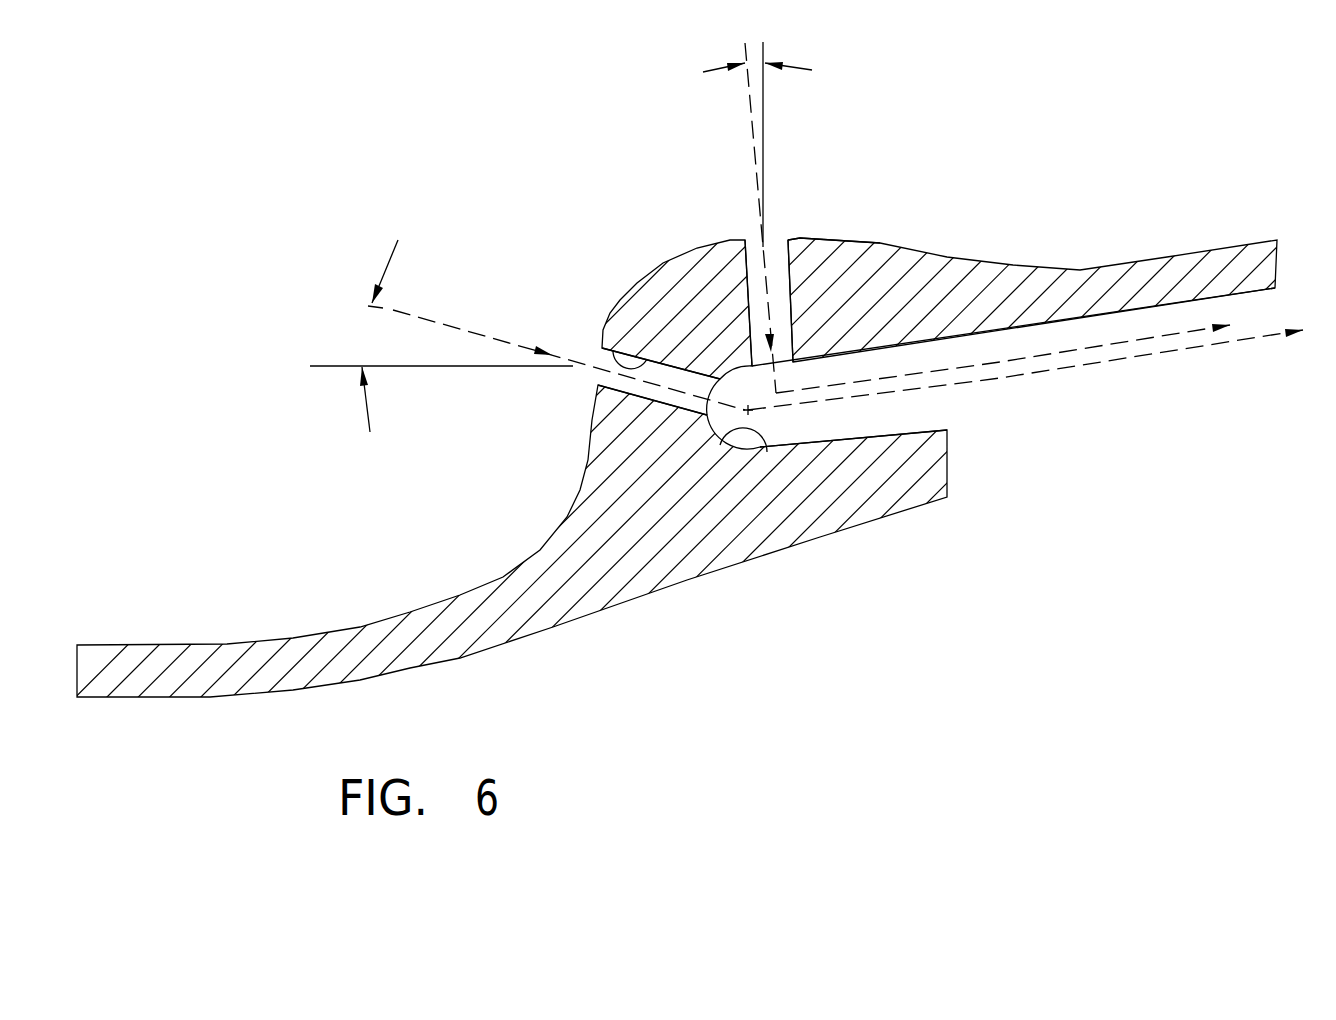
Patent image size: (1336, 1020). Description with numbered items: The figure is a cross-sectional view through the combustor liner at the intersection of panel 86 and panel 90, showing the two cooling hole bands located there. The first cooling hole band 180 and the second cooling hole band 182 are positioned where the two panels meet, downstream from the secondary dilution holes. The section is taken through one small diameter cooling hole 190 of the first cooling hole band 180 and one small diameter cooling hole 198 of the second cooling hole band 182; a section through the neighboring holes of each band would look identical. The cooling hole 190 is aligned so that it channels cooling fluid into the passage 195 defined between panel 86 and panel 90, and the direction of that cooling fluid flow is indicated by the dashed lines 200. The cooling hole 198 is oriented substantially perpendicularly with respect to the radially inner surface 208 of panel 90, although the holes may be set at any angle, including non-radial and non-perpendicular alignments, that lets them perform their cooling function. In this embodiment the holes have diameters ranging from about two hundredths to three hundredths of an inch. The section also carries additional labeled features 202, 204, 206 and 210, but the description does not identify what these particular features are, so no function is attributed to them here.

The panel 86 is at (172, 645).
The panel 90 is at (1190, 253).
The first cooling hole band 180 is at (500, 147).
The second cooling hole band 182 is at (883, 122).
The small diameter cooling holes 190 is at (592, 368).
The passage 195 is at (616, 347).
The small diameter cooling holes 198 is at (777, 238).
The dashed lines 200 is at (752, 98).
The plenum 202 is at (750, 411).
The plenum edge 204 is at (767, 452).
The reference line 206 is at (322, 367).
The radially inner surface 208 is at (1253, 291).
The reference line 210 is at (763, 130).